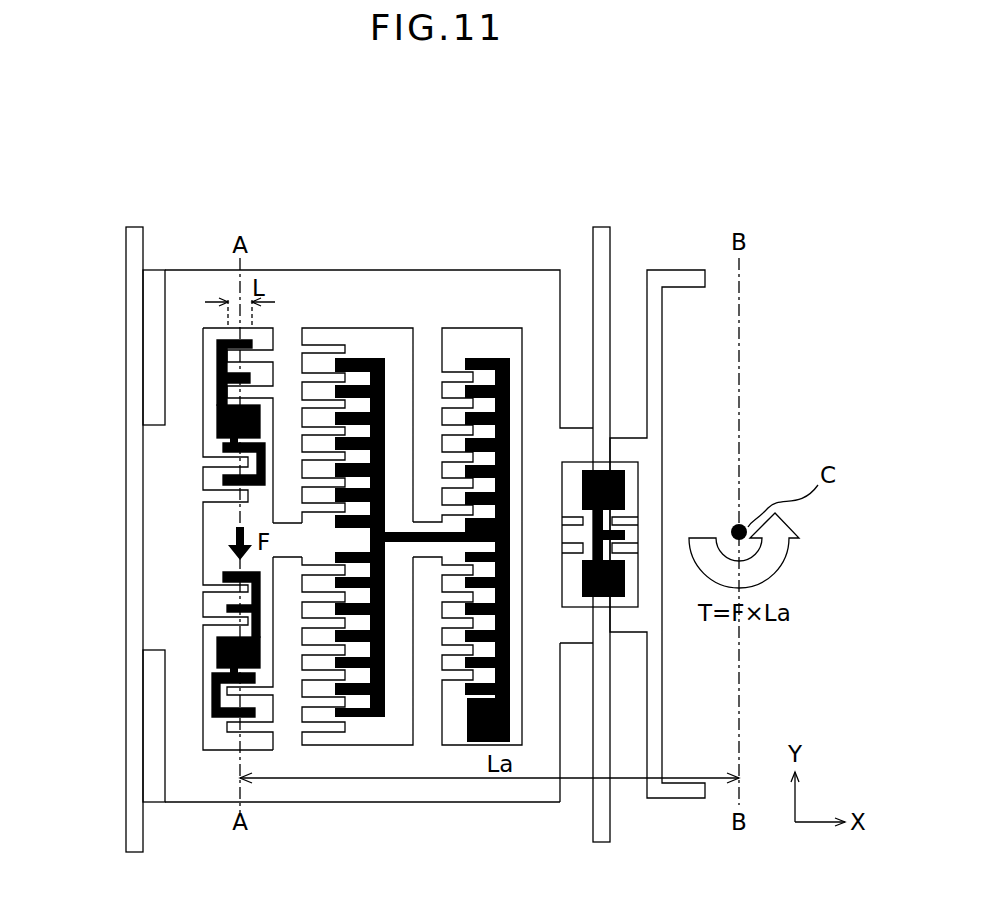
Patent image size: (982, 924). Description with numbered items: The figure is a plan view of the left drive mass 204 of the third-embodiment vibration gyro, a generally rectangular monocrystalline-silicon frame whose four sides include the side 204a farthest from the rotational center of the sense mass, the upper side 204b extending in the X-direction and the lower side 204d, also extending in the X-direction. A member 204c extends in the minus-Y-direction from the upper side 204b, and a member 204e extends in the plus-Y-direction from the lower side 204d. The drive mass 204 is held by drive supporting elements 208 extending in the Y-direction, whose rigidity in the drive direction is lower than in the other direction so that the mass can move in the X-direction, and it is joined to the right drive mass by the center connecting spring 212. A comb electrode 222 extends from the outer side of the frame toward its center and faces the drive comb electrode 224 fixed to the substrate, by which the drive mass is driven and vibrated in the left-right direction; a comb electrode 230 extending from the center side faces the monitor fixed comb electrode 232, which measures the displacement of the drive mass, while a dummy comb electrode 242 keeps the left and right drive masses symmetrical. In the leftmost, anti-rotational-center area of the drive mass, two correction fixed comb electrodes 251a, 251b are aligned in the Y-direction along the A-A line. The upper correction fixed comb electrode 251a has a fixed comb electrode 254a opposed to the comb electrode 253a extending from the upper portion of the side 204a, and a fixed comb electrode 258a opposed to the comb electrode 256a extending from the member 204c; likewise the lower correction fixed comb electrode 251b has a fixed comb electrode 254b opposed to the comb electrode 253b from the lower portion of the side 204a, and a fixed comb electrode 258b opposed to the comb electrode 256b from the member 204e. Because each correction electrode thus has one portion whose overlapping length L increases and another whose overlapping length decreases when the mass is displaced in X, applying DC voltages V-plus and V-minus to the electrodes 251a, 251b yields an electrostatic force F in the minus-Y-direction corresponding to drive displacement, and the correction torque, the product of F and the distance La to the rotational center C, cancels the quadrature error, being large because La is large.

The left drive mass 204 is at (293, 258).
The side farthest from rotational center 204a is at (180, 364).
The upper side 204b is at (290, 365).
The member extending from upper side 204c is at (455, 375).
The lower side 204d is at (200, 787).
The member extending from lower side 204e is at (283, 735).
The drive supporting element 208 is at (135, 228).
The center connecting spring 212 is at (659, 277).
The comb electrode 222 is at (466, 362).
The left drive comb electrode 224 is at (508, 723).
The comb electrode 230 is at (624, 520).
The left drive monitor fixed comb electrode 232 is at (622, 478).
The dummy comb electrode 242 is at (576, 517).
The upper correction fixed comb electrode 251a is at (217, 421).
The lower correction fixed comb electrode 251b is at (217, 637).
The comb electrode 253a is at (220, 497).
The comb electrode 253b is at (220, 588).
The fixed comb electrode 254a is at (227, 479).
The fixed comb electrode 254b is at (227, 602).
The comb electrode 256a is at (262, 352).
The comb electrode 256b is at (230, 733).
The fixed comb electrode 258a is at (244, 340).
The fixed comb electrode 258b is at (230, 717).